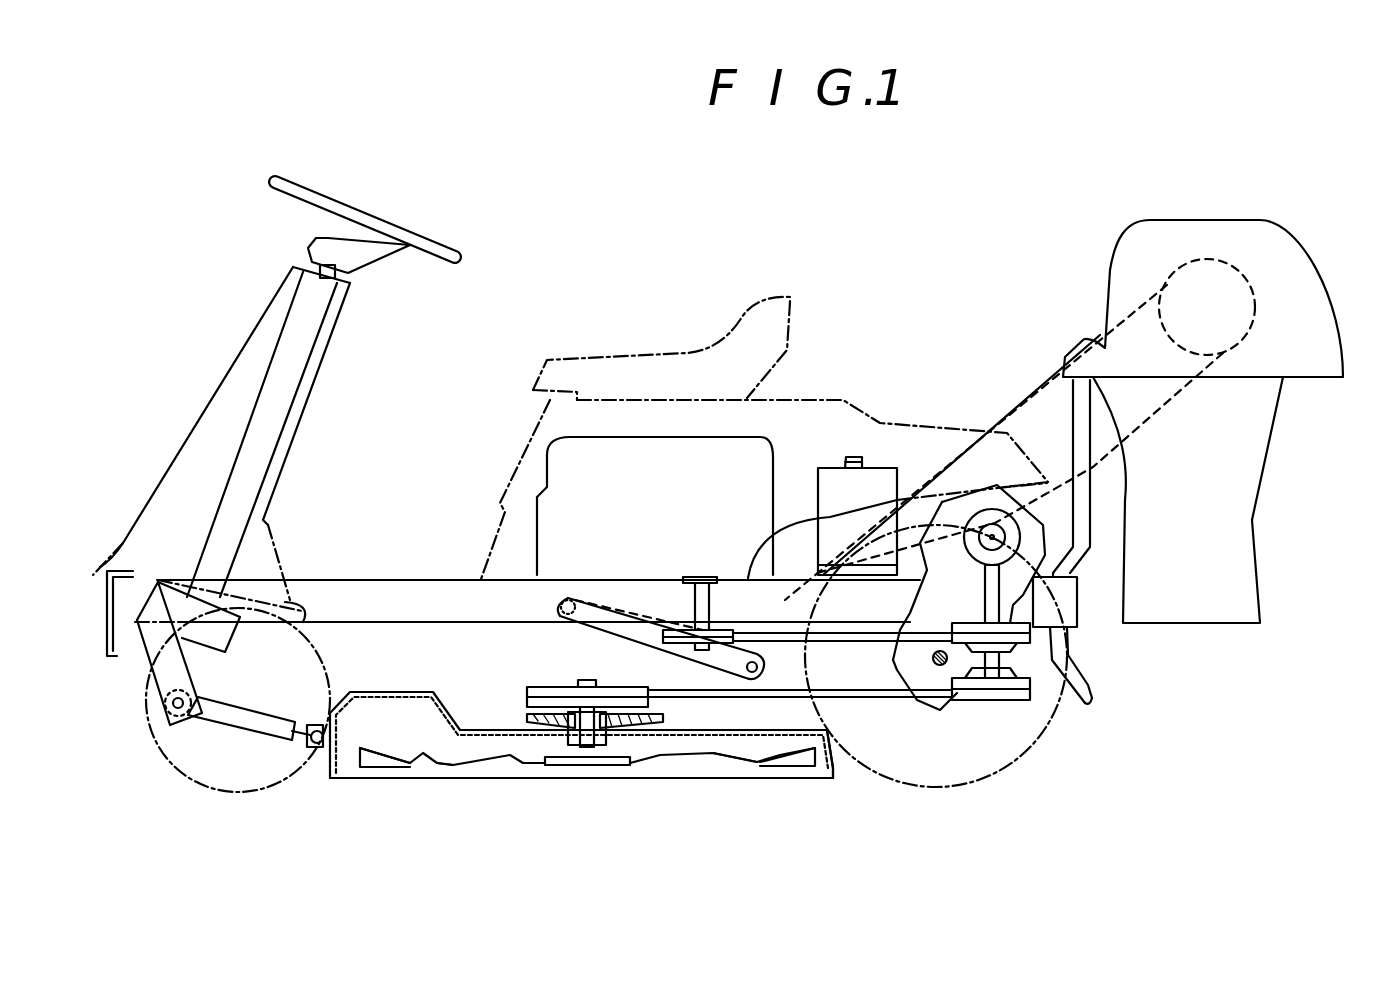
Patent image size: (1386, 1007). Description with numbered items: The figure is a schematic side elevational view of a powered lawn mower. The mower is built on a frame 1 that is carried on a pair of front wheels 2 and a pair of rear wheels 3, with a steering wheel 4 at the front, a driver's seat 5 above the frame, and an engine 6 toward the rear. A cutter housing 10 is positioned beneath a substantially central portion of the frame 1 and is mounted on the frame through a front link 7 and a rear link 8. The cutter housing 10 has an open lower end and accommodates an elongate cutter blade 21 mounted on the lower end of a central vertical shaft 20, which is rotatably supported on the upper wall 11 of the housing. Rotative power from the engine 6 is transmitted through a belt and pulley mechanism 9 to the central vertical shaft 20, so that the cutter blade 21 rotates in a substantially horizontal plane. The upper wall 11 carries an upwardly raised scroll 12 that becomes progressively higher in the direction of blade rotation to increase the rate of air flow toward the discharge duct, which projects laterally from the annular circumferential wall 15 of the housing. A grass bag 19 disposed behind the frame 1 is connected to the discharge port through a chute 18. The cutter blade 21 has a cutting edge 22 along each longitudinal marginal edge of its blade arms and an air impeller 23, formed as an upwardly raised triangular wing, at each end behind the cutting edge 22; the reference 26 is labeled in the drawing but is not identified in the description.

The frame 1 is at (388, 597).
The front wheels 2 is at (203, 790).
The rear wheels 3 is at (1020, 763).
The steering wheel 4 is at (365, 217).
The driver's seat 5 is at (655, 352).
The engine 6 is at (748, 467).
The front link 7 is at (247, 720).
The rear link 8 is at (630, 629).
The belt and pulley mechanism 9 is at (1057, 717).
The cutter housing 10 is at (320, 783).
The upper wall 11 is at (492, 730).
The scroll 12 is at (390, 695).
The circumferential wall 15 is at (838, 757).
The chute 18 is at (1023, 400).
The grass bag 19 is at (1263, 448).
The central vertical shaft 20 is at (587, 747).
The cutter blade 21 is at (803, 786).
The cutting edge 22 is at (770, 762).
The air impeller 23 is at (370, 760).
The cutting edge 26 is at (457, 767).